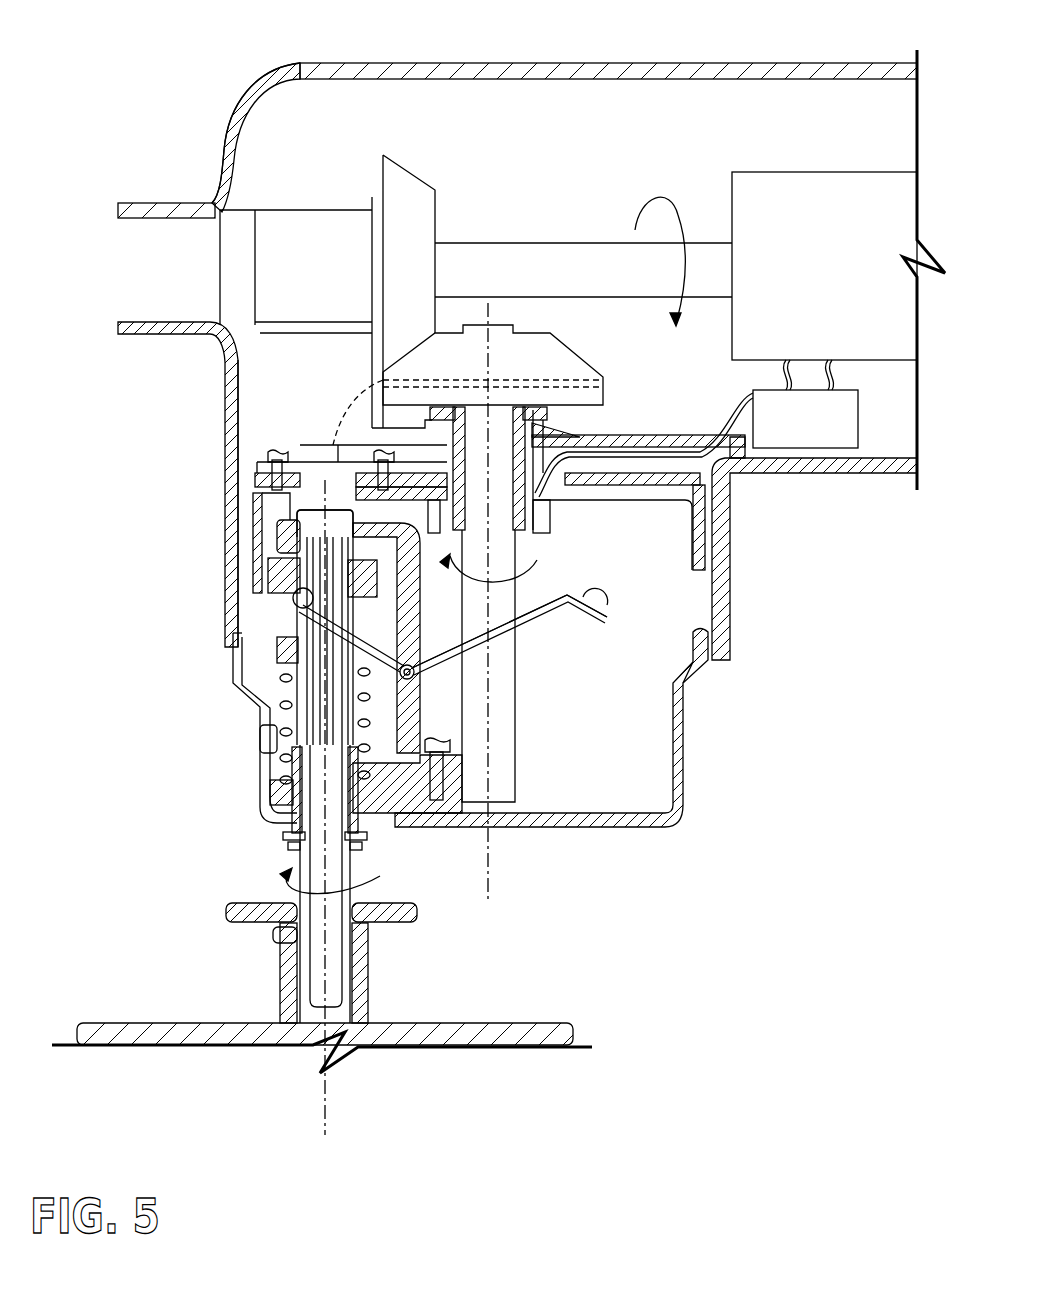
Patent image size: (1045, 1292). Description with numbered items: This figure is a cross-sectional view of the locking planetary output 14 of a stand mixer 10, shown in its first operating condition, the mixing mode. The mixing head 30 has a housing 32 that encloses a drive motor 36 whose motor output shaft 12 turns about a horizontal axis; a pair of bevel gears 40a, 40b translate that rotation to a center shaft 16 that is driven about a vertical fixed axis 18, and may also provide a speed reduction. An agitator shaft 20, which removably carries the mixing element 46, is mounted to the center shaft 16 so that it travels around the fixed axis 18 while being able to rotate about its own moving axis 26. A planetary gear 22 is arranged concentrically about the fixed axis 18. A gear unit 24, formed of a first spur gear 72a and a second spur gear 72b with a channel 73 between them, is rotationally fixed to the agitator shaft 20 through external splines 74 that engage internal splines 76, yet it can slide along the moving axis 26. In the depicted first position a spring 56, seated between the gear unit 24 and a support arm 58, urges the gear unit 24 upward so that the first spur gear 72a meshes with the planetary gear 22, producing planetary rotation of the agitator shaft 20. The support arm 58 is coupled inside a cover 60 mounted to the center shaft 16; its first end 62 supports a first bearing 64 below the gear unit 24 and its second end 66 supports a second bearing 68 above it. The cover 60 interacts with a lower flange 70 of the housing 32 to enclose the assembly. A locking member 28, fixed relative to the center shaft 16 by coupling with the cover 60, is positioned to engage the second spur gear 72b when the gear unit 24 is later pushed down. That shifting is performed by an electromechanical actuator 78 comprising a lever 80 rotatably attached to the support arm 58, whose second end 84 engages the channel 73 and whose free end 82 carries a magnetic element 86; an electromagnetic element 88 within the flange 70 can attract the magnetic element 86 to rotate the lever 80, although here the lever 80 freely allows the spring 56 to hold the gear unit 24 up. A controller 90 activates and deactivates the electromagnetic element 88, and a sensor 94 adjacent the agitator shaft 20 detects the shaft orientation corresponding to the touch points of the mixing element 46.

The stand mixer 10 is at (172, 102).
The motor output shaft 12 is at (487, 253).
The locking planetary output 14 is at (753, 662).
The center shaft 16 is at (497, 725).
The fixed axis 18 is at (490, 850).
The agitator shaft 20 is at (333, 962).
The planetary gear 22 is at (257, 560).
The gear unit 24 is at (256, 622).
The moving axis 26 is at (325, 1110).
The locking member 28 is at (263, 743).
The mixing head 30 is at (634, 58).
The housing 32 is at (437, 66).
The drive motor 36 is at (813, 281).
The bevel gear 40a is at (400, 187).
The bevel gear 40b is at (553, 360).
The mixing element 46 is at (177, 1023).
The spring 56 is at (363, 750).
The support arm 58 is at (420, 717).
The cover 60 is at (678, 733).
The first end 62 is at (297, 547).
The first bearing 64 is at (283, 528).
The second end 66 is at (277, 790).
The second bearing 68 is at (303, 813).
The lower flange 70 is at (722, 540).
The first spur gear 72a is at (273, 590).
The second spur gear 72b is at (273, 727).
The channel 73 is at (384, 611).
The external splines 74 is at (310, 535).
The internal splines 76 is at (300, 607).
The electromechanical actuator 78 is at (638, 616).
The lever 80 is at (530, 620).
The free end 82 is at (600, 618).
The second end 84 is at (277, 660).
The magnetic element 86 is at (583, 597).
The electromagnetic element 88 is at (550, 512).
The controller 90 is at (792, 432).
The sensor 94 is at (313, 470).